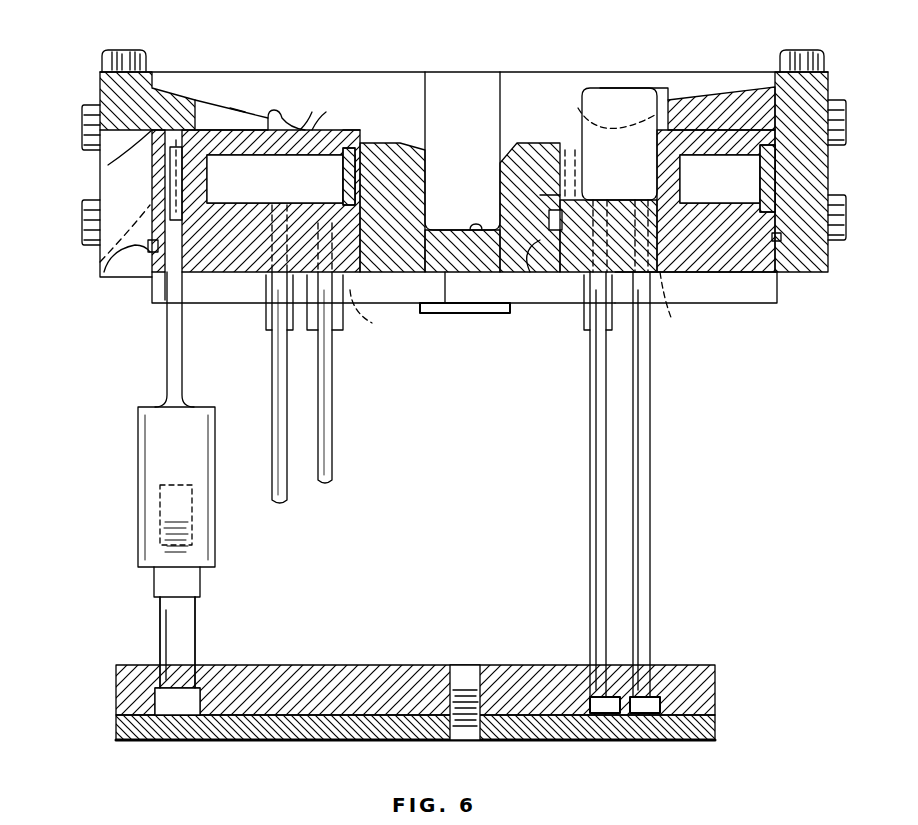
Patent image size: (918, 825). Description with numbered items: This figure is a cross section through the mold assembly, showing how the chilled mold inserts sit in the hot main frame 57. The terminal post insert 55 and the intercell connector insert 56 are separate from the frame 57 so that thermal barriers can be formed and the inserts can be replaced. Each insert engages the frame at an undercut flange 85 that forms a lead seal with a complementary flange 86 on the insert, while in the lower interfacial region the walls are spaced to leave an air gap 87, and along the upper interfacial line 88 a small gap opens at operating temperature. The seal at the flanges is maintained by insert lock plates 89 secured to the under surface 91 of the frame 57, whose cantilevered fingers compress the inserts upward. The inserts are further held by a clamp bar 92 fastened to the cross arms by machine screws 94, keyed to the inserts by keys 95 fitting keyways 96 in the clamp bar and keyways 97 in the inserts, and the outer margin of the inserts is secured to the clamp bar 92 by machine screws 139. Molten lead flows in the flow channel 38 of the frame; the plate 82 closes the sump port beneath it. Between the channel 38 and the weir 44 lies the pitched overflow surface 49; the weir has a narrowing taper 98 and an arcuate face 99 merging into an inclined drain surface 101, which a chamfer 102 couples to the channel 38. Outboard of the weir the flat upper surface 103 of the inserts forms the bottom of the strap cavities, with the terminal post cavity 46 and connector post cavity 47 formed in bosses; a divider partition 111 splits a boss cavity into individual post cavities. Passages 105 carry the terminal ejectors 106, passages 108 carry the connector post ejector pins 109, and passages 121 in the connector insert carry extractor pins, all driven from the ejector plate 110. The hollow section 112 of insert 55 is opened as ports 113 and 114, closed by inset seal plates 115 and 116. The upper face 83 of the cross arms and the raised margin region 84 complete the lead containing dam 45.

The flow channel 38 is at (488, 303).
The weir 44 is at (272, 108).
The lead containing dam 45 is at (828, 73).
The terminal post cavity 46 is at (150, 134).
The intercell connector post cavity 47 is at (580, 108).
The overflow surface 49 is at (350, 125).
The terminal post insert 55 is at (248, 275).
The intercell connector insert 56 is at (738, 268).
The frame 57 is at (445, 305).
The plate 82 is at (487, 274).
The upper face of cross arms 83 is at (405, 72).
The outermost margin portion 84 is at (152, 72).
The undercut flange 85 is at (549, 214).
The complementary flange 86 is at (545, 195).
The air gap 87 is at (530, 272).
The upper interfacial line 88 is at (545, 160).
The insert lock plate 89 is at (340, 322).
The under surface of frame 91 is at (570, 305).
The clamp bar 92 is at (110, 183).
The machine screw 94 is at (82, 130).
The key 95 is at (165, 305).
The keyway in clamp bar 96 is at (112, 248).
The keyway in insert 97 is at (147, 252).
The narrowing taper 98 is at (245, 108).
The arcuate face 99 is at (308, 110).
The inclined drain surface 101 is at (318, 118).
The chamfer 102 is at (430, 135).
The upper surface of insert 103 is at (247, 112).
The terminal ejector passage 105 is at (183, 312).
The terminal ejector 106 is at (168, 385).
The connector post ejector pin passage 108 is at (381, 315).
The connector post ejector pin 109 is at (328, 418).
The ejector plate 110 is at (347, 665).
The divider partition 111 is at (618, 88).
The hollow section 112 is at (345, 140).
The inner-face port 113 is at (352, 172).
The outer-face port 114 is at (100, 255).
The seal plate 115 is at (380, 150).
The seal plate 116 is at (180, 195).
The extractor pin passage 121 is at (694, 306).
The machine screw 139 is at (118, 50).